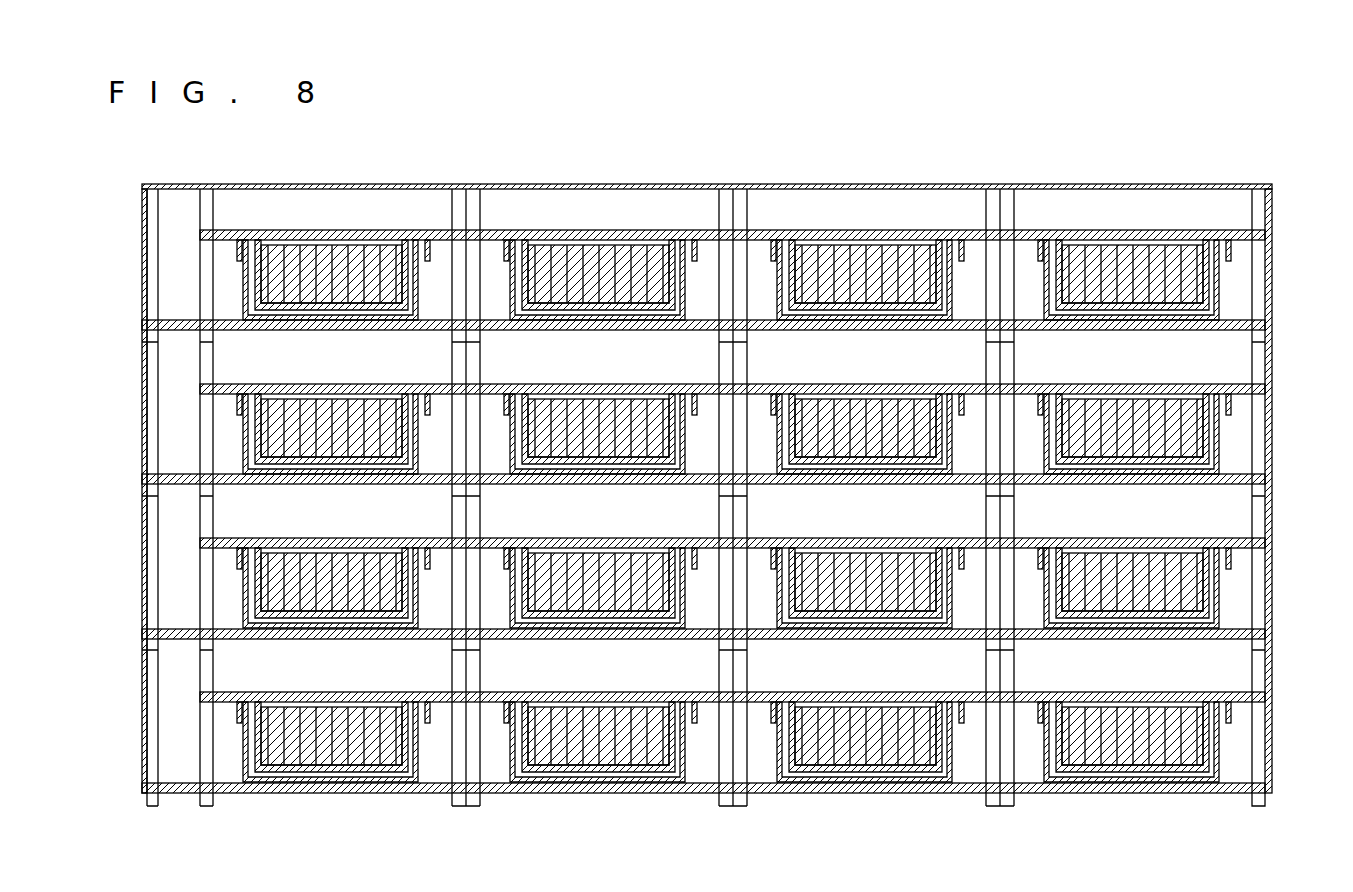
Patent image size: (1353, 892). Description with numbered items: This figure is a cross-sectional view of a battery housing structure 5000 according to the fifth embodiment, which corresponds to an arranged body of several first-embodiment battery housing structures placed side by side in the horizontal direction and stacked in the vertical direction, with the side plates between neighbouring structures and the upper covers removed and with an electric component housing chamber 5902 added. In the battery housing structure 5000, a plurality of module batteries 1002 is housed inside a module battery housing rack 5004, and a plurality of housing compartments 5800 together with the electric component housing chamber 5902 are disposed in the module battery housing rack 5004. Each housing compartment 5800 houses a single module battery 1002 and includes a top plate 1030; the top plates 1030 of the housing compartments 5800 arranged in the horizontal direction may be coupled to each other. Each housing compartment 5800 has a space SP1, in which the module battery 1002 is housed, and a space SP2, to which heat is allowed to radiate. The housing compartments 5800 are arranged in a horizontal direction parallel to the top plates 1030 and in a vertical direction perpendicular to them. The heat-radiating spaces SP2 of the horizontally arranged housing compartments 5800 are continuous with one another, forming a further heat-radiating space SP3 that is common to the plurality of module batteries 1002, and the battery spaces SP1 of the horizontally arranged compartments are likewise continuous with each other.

The battery housing structure 5000 is at (1268, 180).
The housing compartment 5800 is at (428, 347).
The electric component housing chamber 5902 is at (172, 393).
The module battery housing rack 5004 is at (1267, 797).
The module battery 1002 is at (243, 287).
The top plate 1030 is at (413, 386).
The space SP1 is at (438, 424).
The space SP2 is at (292, 362).
The space SP3 is at (1277, 215).